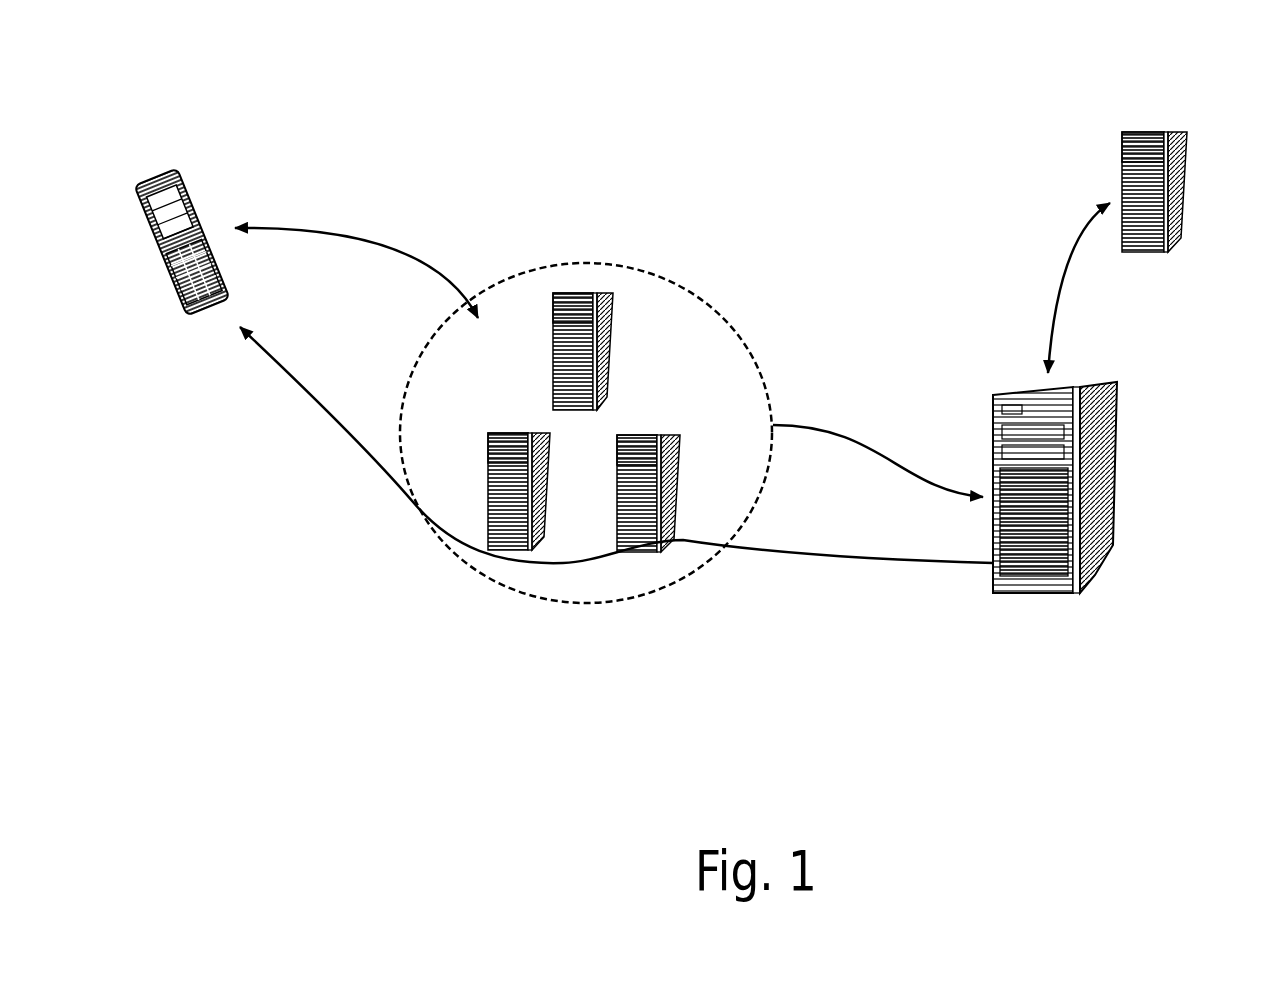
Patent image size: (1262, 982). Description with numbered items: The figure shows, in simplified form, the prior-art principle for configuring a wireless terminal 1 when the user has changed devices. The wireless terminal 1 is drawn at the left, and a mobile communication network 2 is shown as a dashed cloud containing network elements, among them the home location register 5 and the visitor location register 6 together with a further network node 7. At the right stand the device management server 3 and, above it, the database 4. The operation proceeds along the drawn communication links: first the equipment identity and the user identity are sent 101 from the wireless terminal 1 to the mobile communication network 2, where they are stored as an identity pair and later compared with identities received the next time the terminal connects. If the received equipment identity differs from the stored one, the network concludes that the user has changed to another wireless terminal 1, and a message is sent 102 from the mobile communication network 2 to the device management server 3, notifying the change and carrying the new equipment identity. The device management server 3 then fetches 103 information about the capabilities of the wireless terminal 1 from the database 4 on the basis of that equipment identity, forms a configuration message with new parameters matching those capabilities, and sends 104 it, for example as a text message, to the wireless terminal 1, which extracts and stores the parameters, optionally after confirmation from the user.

The wireless terminal 1 is at (170, 273).
The mobile communication network 2 is at (512, 588).
The device management server 3 is at (1043, 580).
The database 4 is at (1170, 130).
The home location register 5 is at (520, 433).
The visitor location register 6 is at (647, 437).
The network node 7 is at (582, 292).
The sending of equipment identity and user identity 101 is at (333, 237).
The sending of a change notification message 102 is at (857, 437).
The fetching of terminal capability information 103 is at (1057, 277).
The sending of a configuration message 104 is at (807, 557).